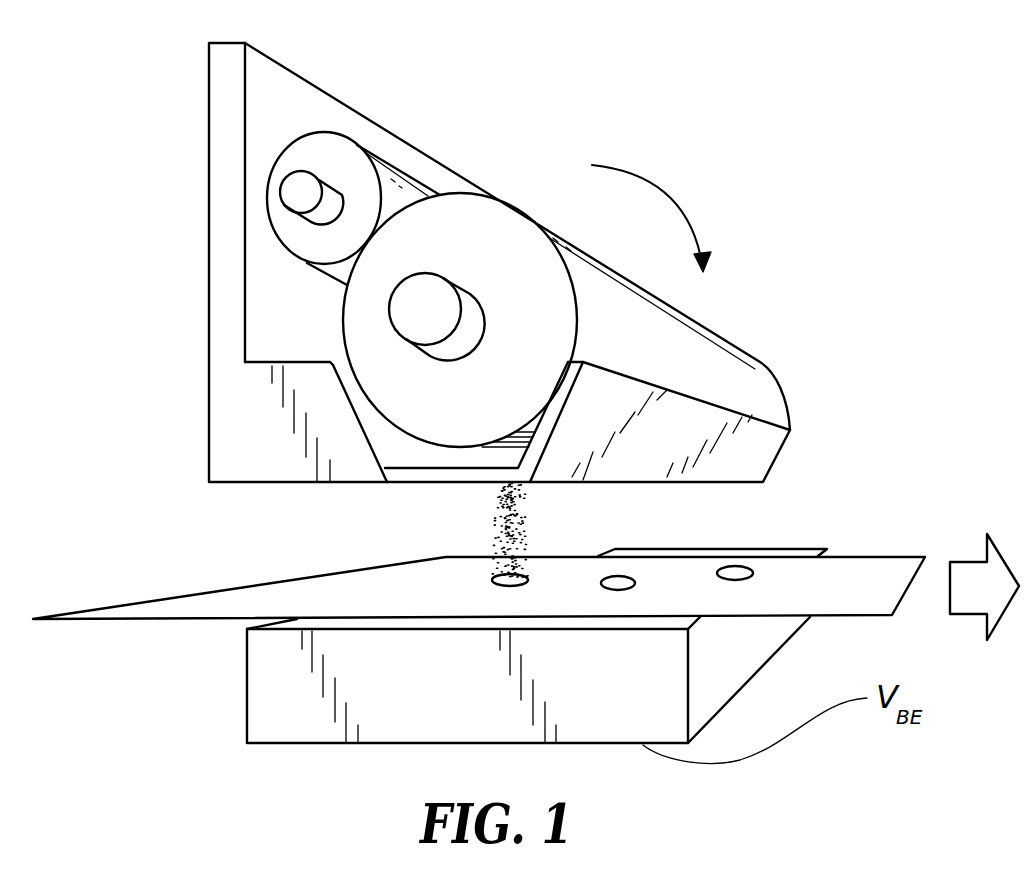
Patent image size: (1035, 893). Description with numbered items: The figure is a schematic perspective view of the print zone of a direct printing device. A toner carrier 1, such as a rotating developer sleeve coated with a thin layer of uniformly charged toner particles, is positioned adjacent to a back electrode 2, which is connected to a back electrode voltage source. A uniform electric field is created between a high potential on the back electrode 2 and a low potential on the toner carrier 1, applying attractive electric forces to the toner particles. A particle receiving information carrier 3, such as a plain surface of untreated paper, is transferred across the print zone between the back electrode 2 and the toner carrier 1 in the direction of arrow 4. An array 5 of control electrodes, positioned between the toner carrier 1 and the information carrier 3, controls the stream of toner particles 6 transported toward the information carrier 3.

The toner carrier 1 is at (543, 226).
The back electrode 2 is at (270, 697).
The information carrier 3 is at (850, 577).
The arrow 4 is at (998, 600).
The array of control electrodes 5 is at (417, 483).
The stream of toner particles 6 is at (525, 528).